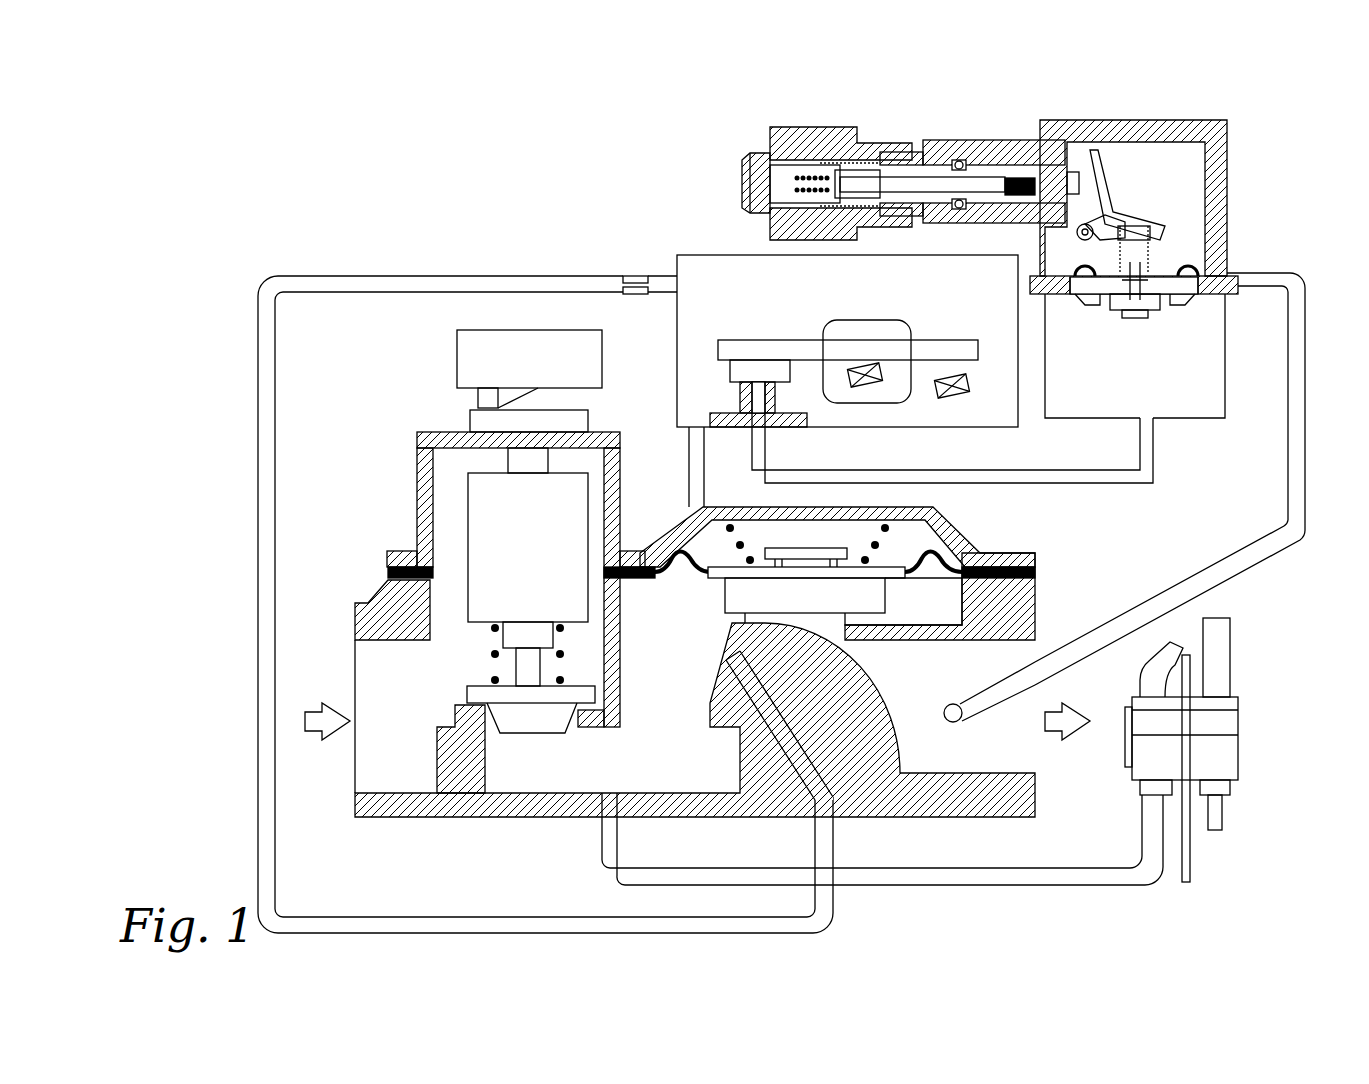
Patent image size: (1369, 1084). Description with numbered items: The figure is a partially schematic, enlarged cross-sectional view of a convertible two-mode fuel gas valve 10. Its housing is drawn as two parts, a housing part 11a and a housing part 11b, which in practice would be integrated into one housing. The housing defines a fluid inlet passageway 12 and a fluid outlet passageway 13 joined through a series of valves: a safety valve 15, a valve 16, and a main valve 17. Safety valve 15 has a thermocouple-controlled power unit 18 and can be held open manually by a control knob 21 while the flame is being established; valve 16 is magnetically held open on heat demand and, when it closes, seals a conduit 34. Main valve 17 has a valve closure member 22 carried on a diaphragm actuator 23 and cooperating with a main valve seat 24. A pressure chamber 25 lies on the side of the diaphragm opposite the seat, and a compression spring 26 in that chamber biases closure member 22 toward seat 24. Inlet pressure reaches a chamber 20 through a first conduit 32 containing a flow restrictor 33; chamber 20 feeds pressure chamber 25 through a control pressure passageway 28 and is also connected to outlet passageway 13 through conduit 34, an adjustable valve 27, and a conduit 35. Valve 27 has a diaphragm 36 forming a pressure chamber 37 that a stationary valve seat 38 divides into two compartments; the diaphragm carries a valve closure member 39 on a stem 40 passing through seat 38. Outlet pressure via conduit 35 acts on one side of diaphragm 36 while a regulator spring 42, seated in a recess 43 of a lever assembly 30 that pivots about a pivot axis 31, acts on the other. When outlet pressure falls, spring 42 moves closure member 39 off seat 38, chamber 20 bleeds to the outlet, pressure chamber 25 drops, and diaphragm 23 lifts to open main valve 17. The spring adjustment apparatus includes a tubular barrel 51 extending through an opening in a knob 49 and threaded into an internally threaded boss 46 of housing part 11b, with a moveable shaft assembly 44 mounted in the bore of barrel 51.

The fuel gas valve 10 is at (1096, 523).
The housing part 11a is at (368, 610).
The housing part 11b is at (1228, 190).
The fluid inlet passageway 12 is at (375, 683).
The fluid outlet passageway 13 is at (1030, 748).
The safety valve 15 is at (437, 712).
The valve 16 is at (728, 393).
The main valve 17 is at (705, 642).
The power unit 18 is at (478, 518).
The chamber 20 is at (713, 268).
The control knob 21 is at (462, 348).
The valve closure member 22 is at (740, 598).
The diaphragm actuator 23 is at (968, 548).
The main valve seat 24 is at (848, 626).
The pressure chamber 25 is at (918, 528).
The compression spring 26 is at (742, 540).
The adjustable valve 27 is at (1092, 338).
The control pressure passageway 28 is at (690, 478).
The lever assembly 30 is at (1100, 155).
The pivot axis 31 is at (1085, 240).
The first conduit 32 is at (835, 908).
The flow restrictor 33 is at (640, 296).
The conduit 34 is at (1150, 478).
The conduit 35 is at (1303, 468).
The diaphragm 36 is at (1195, 272).
The pressure chamber 37 is at (1088, 298).
The stationary valve seat 38 is at (1180, 296).
The valve closure member 39 is at (1140, 302).
The stem 40 is at (1128, 298).
The regulator spring 42 is at (1155, 242).
The recess 43 is at (1160, 225).
The shaft assembly 44 is at (978, 195).
The internally threaded boss 46 is at (985, 150).
The knob 49 is at (845, 127).
The barrel 51 is at (915, 160).